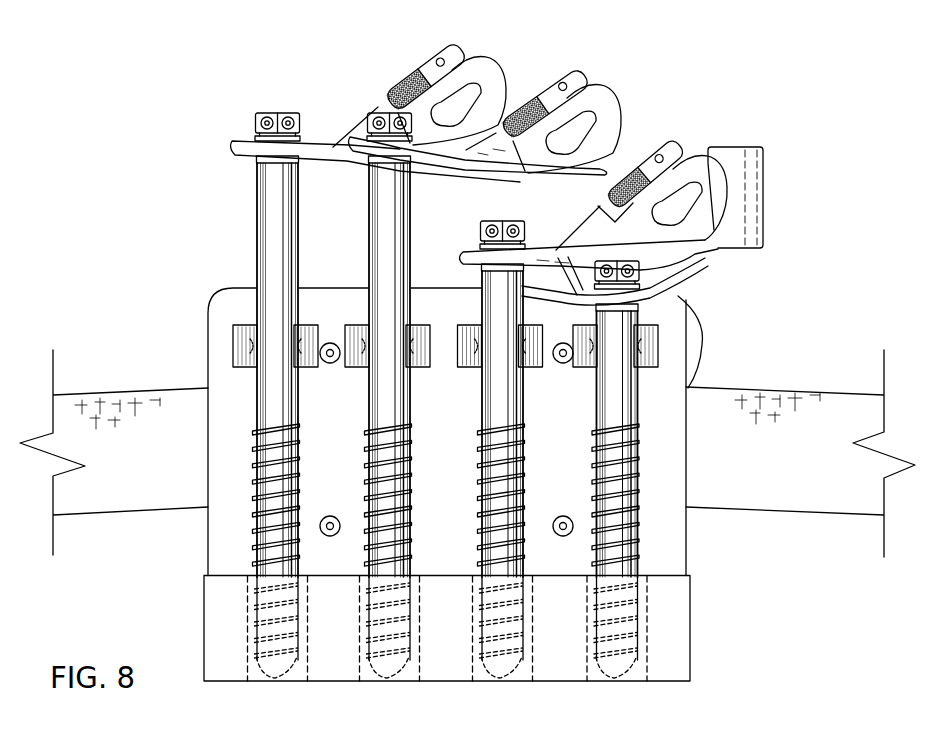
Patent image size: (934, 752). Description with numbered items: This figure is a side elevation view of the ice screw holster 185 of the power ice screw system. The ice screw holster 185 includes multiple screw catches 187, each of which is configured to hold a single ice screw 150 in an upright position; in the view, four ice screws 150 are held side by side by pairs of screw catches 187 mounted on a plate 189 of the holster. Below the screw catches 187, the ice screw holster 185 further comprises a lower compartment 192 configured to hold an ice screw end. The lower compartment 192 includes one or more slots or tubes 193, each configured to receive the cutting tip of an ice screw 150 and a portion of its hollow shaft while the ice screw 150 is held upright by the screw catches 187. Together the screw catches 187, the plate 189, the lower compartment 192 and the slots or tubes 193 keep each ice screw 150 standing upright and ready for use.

The ice screw holster 185 is at (432, 378).
The mounting plate 189 is at (686, 332).
The screw catches 187 is at (314, 367).
The ice screw 150 is at (258, 520).
The lower compartment 192 is at (690, 628).
The slots or tubes 193 is at (247, 644).